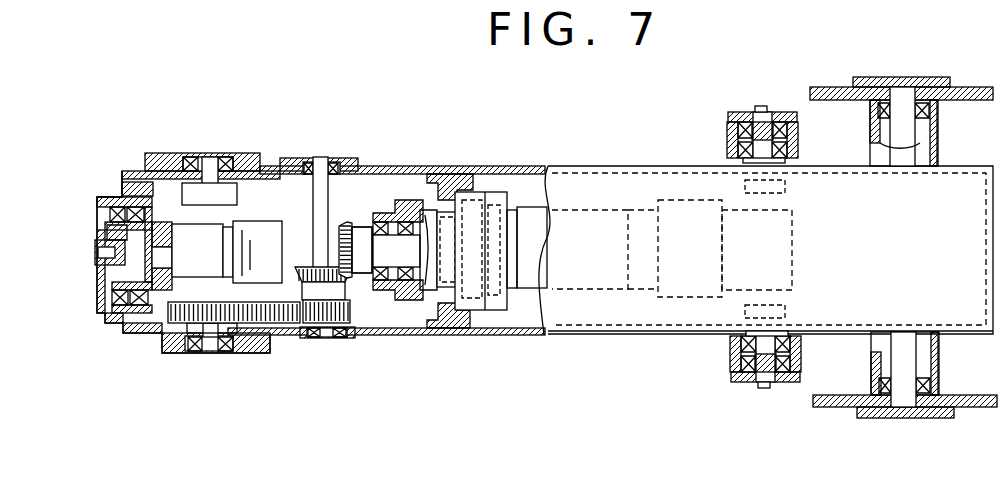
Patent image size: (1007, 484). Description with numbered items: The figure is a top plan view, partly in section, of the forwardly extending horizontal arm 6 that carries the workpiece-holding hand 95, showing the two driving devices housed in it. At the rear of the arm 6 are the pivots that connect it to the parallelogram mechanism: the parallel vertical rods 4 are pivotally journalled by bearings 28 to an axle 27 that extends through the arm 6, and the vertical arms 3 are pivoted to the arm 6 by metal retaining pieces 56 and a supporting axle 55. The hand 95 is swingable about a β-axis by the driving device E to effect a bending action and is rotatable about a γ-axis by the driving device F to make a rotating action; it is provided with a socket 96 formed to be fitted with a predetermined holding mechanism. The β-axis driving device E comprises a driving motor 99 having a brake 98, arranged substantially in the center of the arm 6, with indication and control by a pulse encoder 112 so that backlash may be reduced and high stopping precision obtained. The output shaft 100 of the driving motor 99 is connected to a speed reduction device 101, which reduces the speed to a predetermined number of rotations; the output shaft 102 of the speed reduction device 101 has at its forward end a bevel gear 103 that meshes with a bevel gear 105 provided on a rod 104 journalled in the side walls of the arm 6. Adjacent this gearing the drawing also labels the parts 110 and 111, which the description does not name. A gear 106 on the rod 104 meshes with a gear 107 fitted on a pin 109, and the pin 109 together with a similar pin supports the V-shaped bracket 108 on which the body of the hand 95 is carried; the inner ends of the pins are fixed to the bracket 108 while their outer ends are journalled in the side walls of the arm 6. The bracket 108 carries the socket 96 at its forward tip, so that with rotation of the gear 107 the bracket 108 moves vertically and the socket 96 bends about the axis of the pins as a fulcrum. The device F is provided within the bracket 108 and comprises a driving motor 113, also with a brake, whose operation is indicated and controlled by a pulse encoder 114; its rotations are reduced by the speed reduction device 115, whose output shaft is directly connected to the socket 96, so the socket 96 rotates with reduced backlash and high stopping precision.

The vertical arm 3 is at (834, 87).
The parallel vertical rod 4 is at (728, 140).
The arm 6 is at (554, 166).
The axle 27 is at (785, 160).
The bearing 28 is at (757, 110).
The supporting axle 55 is at (938, 122).
The metal retaining piece 56 is at (900, 77).
The hand 95 is at (117, 320).
The socket 96 is at (101, 302).
The brake 98 is at (680, 200).
The driving motor 99 is at (590, 210).
The output shaft 100 is at (492, 314).
The speed reduction device 101 is at (448, 328).
The output shaft 102 is at (402, 252).
The bevel gear 103 is at (346, 228).
The rod 104 is at (317, 192).
The bevel gear 105 is at (307, 267).
The gear 106 is at (352, 311).
The gear 107 is at (248, 335).
The bracket 108 is at (162, 214).
The pin 109 is at (209, 165).
The support block 110 is at (457, 174).
The bracket 111 is at (384, 188).
The pulse encoder 112 is at (795, 266).
The driving motor 113 is at (163, 285).
The pulse encoder 114 is at (239, 232).
The speed reduction device 115 is at (97, 258).
The β-axis driving device E is at (362, 220).
The γ-axis driving device F is at (104, 181).